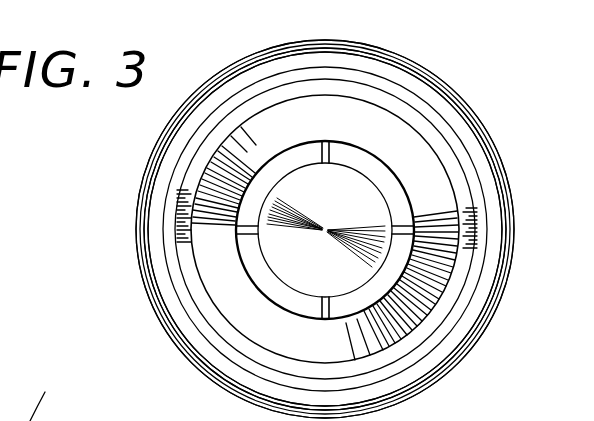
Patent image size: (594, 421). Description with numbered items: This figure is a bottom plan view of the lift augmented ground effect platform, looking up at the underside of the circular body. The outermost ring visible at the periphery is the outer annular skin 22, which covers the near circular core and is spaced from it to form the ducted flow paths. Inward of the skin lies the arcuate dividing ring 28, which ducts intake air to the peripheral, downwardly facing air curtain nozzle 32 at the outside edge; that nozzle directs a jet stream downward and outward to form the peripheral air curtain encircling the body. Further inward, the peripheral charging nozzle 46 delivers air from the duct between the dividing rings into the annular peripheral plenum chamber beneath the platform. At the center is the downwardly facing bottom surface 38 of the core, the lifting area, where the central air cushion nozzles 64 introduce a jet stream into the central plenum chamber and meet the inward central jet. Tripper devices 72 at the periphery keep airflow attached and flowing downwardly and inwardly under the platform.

The outer annular skin 22 is at (124, 239).
The dividing ring 28 is at (480, 165).
The peripheral air curtain nozzle 32 is at (500, 275).
The bottom surface of core 38 is at (327, 270).
The peripheral charging nozzle 46 is at (450, 128).
The central air cushion nozzle 64 is at (373, 163).
The tripper device 72 is at (524, 242).